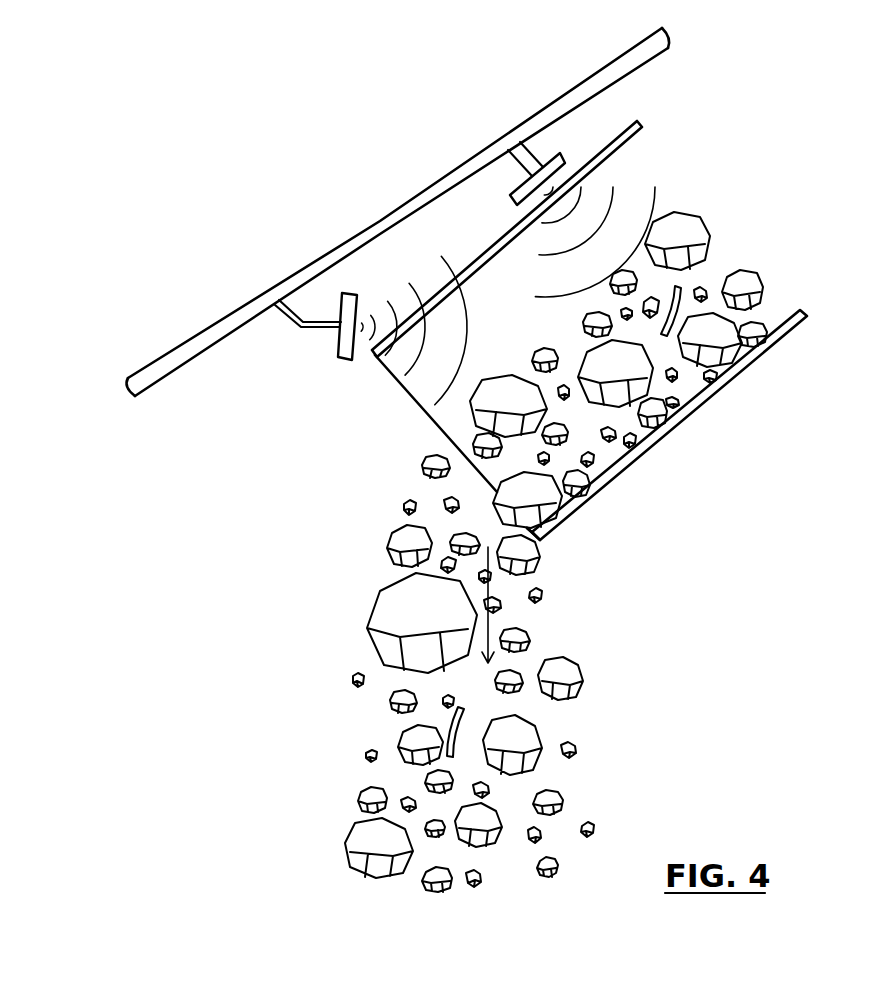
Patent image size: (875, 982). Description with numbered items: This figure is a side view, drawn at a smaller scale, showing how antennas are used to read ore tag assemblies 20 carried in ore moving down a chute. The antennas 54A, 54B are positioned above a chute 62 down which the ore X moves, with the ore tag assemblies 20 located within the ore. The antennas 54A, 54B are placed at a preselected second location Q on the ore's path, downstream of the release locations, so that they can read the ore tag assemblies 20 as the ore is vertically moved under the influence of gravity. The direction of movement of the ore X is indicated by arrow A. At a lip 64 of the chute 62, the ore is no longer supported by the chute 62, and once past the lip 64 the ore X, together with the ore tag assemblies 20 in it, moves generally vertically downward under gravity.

The antenna 54A is at (547, 167).
The antenna 54B is at (338, 339).
The chute 62 is at (780, 330).
The lip 64 is at (542, 543).
The ore tag assembly 20 is at (682, 287).
The preselected second location Q is at (271, 262).
The ore X is at (663, 417).
The arrow A is at (488, 615).